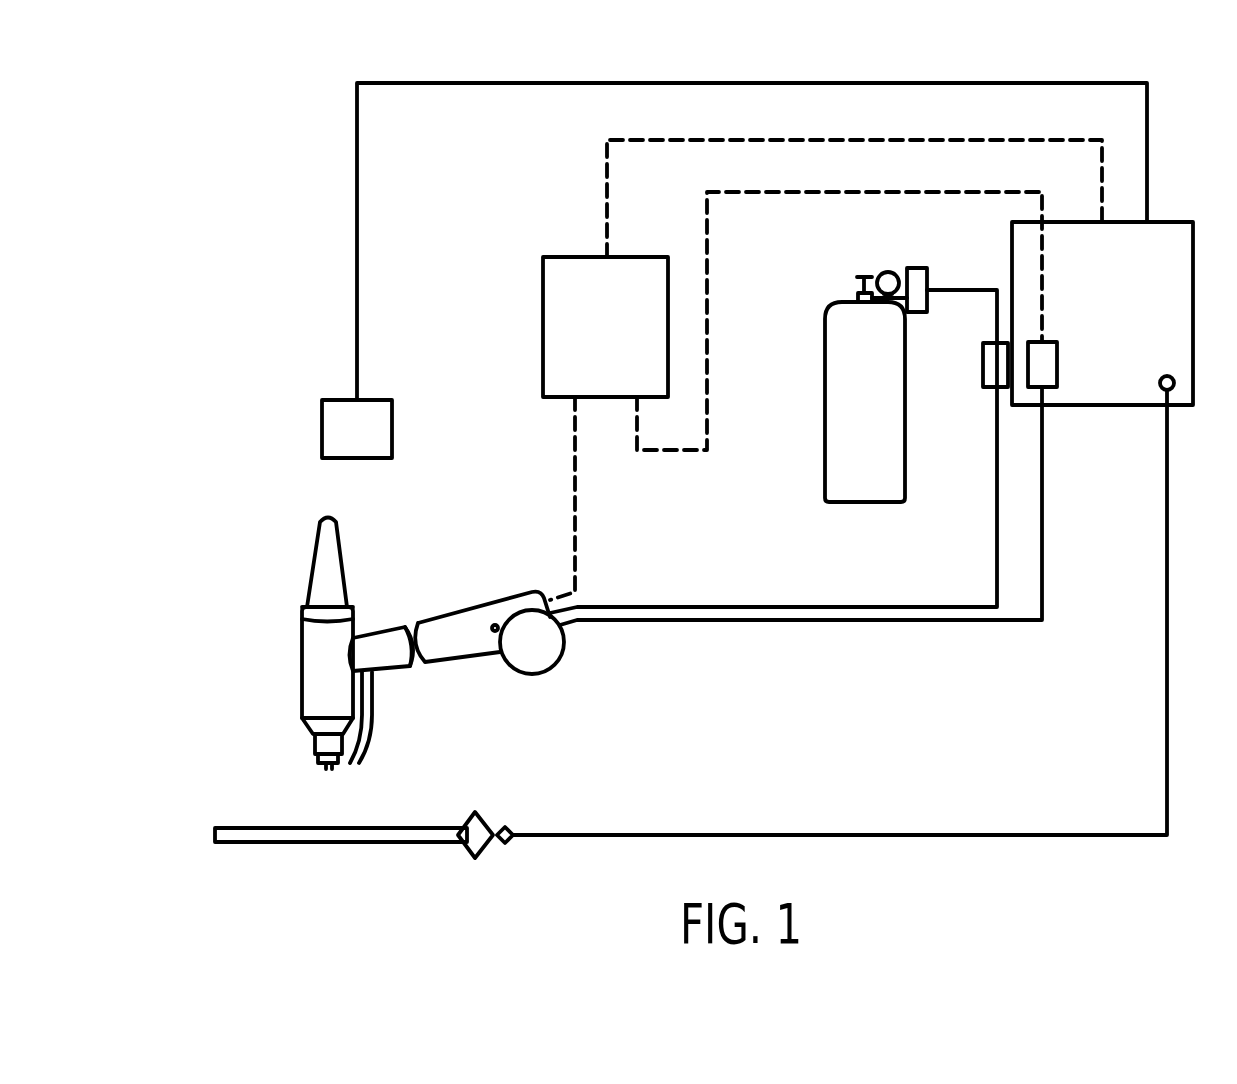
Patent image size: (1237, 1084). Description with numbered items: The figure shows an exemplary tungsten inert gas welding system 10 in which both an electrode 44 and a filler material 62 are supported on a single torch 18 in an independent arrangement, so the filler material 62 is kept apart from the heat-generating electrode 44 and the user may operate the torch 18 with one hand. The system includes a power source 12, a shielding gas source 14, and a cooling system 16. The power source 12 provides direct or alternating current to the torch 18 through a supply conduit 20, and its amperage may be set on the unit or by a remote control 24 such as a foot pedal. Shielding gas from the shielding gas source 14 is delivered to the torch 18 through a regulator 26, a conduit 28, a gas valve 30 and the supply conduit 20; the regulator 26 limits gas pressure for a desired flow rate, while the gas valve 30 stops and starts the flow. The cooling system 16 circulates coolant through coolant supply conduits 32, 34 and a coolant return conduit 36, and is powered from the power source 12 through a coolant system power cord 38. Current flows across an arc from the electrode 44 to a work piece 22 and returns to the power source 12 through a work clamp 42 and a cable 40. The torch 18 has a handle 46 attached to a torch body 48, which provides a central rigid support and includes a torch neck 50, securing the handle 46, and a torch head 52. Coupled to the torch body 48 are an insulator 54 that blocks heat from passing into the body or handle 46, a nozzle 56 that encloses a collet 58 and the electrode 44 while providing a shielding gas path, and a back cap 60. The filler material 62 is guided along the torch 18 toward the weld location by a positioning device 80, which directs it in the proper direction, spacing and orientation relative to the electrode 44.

The welding system 10 is at (694, 500).
The power source 12 is at (1137, 275).
The shielding gas source 14 is at (882, 418).
The cooling system 16 is at (622, 342).
The torch 18 is at (379, 649).
The supply conduit 20 is at (925, 605).
The work piece 22 is at (340, 843).
The remote control 24 is at (350, 434).
The regulator 26 is at (891, 270).
The conduit 28 is at (968, 287).
The gas valve 30 is at (983, 365).
The coolant supply conduit 32 is at (660, 452).
The coolant supply conduit 34 is at (876, 620).
The coolant return conduit 36 is at (572, 495).
The coolant system power cord 38 is at (850, 140).
The cable 40 is at (815, 832).
The work clamp 42 is at (485, 845).
The electrode 44 is at (327, 768).
The handle 46 is at (452, 660).
The torch body 48 is at (291, 649).
The torch neck 50 is at (378, 628).
The torch head 52 is at (320, 665).
The insulator 54 is at (302, 598).
The nozzle 56 is at (315, 745).
The collet 58 is at (318, 760).
The back cap 60 is at (337, 540).
The filler material 62 is at (350, 764).
The positioning device 80 is at (395, 740).